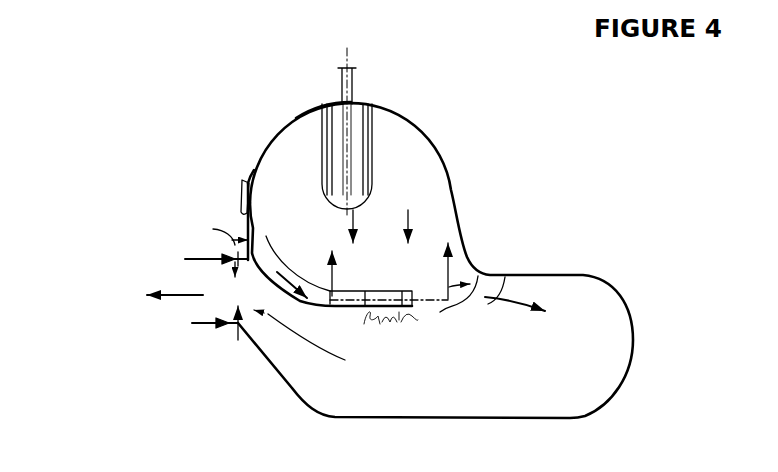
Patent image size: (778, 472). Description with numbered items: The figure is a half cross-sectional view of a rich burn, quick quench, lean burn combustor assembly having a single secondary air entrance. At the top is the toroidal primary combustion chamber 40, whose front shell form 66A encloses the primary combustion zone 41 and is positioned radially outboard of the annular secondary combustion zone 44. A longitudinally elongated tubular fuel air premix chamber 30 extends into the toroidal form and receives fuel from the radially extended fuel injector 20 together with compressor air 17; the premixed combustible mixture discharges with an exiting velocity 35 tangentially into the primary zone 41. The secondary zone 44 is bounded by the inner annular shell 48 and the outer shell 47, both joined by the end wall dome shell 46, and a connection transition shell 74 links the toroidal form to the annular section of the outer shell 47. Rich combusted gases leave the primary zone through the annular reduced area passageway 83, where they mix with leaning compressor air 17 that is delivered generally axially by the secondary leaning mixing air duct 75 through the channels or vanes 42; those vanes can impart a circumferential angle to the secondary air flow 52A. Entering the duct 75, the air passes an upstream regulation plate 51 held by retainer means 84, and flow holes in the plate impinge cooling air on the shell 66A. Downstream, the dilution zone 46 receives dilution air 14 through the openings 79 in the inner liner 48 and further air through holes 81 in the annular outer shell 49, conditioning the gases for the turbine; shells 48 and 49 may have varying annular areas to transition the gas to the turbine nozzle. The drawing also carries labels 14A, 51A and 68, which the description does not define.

The dilution air 14 is at (232, 258).
The inlet passage 14A is at (232, 262).
The compressor air flow 17 is at (462, 428).
The fuel injector 20 is at (345, 80).
The fuel air premix chamber 30 is at (365, 143).
The exiting velocity 35 is at (449, 192).
The primary combustion chamber 40 is at (423, 129).
The primary combustion zone 41 is at (392, 202).
The channels/vanes 42 is at (413, 291).
The secondary combustion zone 44 is at (555, 344).
The end wall dome shell 46 is at (633, 358).
The outer shell 47 is at (541, 275).
The inner annular shell 48 is at (418, 418).
The annular outer shell 49 is at (335, 308).
The upstream regulation detail 51 is at (245, 218).
The valve plate 51A is at (237, 242).
The angular secondary air flow 52A is at (447, 262).
The front toroidal form shell 66A is at (292, 118).
The inner wall 68 is at (367, 230).
The connection transition shell 74 is at (464, 250).
The secondary leaning mixing air duct 75 is at (264, 248).
The liner openings 79 is at (230, 330).
The holes 81 is at (230, 262).
The annular reduced area passageway 83 is at (510, 262).
The retainer means 84 is at (245, 186).